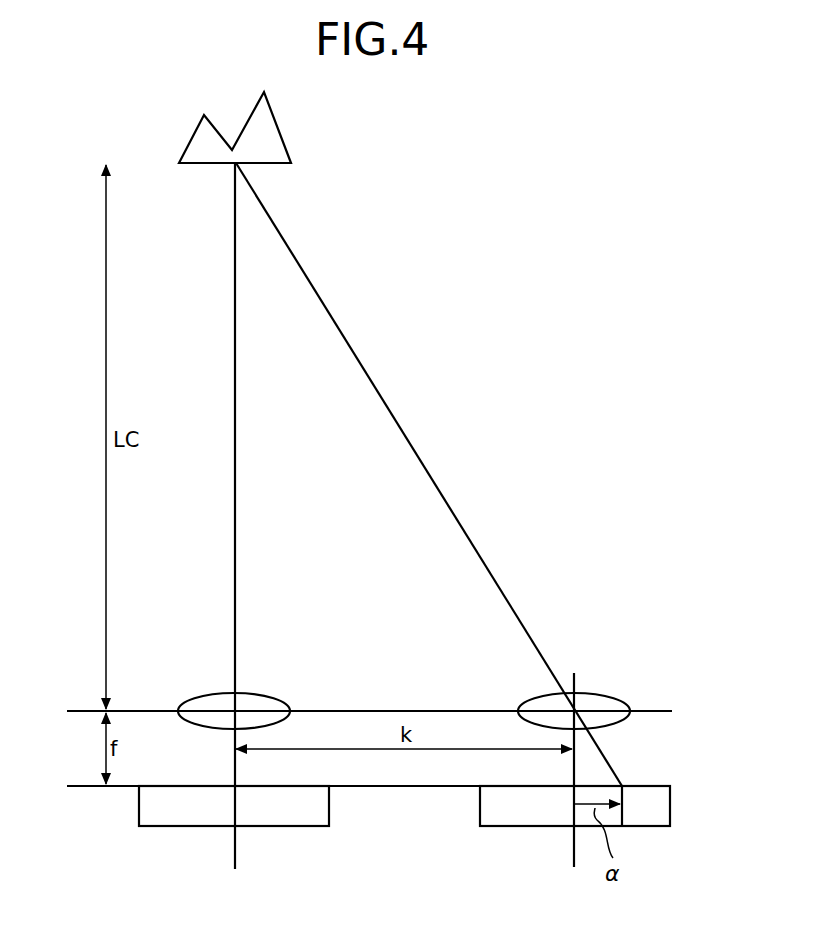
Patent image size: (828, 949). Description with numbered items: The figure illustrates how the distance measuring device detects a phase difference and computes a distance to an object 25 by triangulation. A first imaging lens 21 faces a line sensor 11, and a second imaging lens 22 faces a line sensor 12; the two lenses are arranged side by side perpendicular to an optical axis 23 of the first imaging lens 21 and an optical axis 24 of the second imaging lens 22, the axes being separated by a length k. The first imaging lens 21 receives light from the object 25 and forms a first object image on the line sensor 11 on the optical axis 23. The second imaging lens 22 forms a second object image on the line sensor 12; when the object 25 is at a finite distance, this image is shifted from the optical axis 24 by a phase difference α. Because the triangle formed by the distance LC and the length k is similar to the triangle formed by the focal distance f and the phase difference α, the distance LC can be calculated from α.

The line sensor 11 is at (158, 818).
The line sensor 12 is at (498, 817).
The first imaging lens 21 is at (262, 702).
The second imaging lens 22 is at (601, 702).
The optical axis 23 is at (233, 861).
The optical axis 24 is at (572, 860).
The object 25 is at (267, 133).